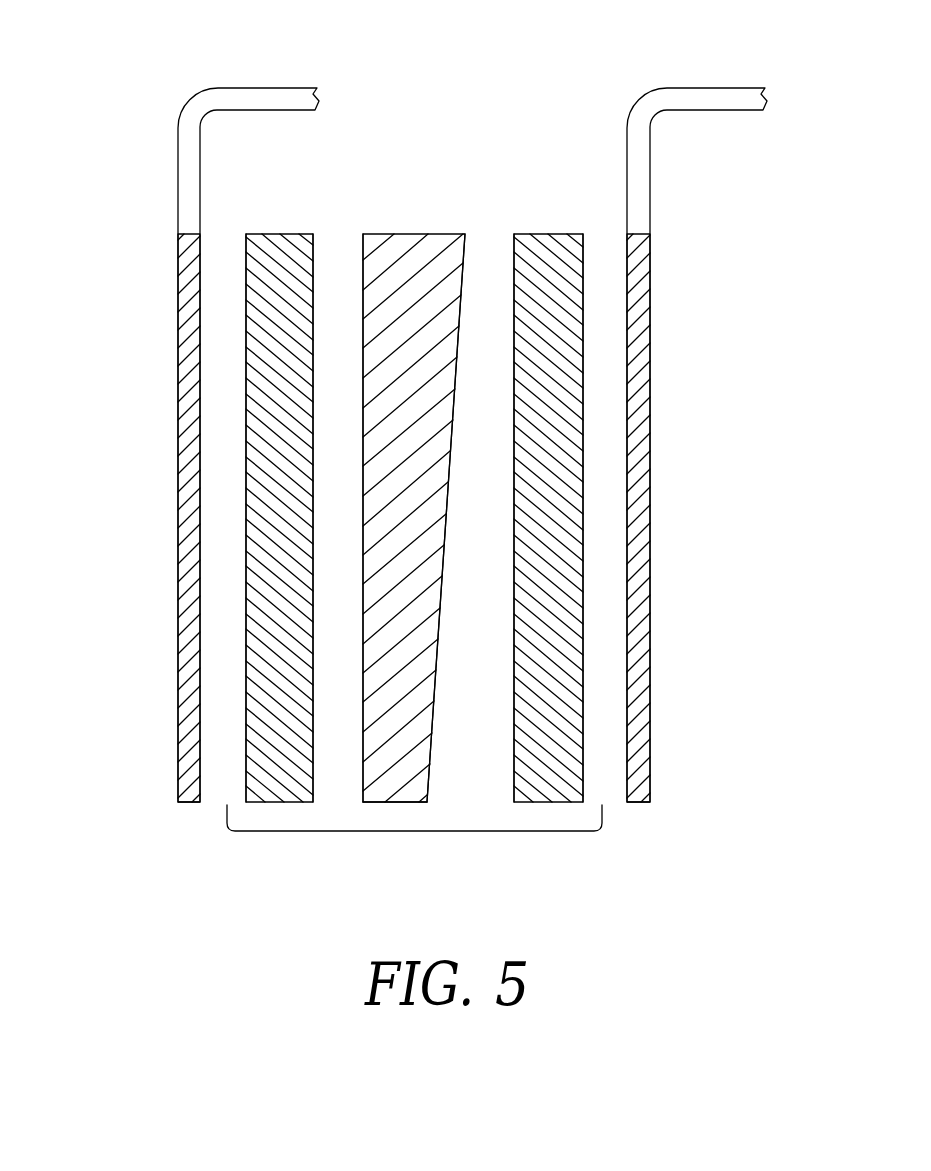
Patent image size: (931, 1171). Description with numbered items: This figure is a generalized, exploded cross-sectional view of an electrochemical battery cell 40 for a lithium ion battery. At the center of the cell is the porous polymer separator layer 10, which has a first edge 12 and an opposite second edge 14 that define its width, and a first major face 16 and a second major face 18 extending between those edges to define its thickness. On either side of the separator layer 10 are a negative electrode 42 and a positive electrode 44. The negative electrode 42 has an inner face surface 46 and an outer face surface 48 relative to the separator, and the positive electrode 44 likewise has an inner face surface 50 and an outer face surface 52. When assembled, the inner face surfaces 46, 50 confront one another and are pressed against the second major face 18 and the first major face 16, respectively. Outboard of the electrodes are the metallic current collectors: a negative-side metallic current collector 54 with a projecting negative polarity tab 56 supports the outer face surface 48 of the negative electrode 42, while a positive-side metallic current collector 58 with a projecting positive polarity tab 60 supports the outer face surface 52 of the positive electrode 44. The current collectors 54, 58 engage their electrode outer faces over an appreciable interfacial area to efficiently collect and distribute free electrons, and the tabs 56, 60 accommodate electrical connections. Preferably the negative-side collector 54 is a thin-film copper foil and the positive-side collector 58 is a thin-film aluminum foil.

The porous polymer separator layer 10 is at (417, 499).
The first edge 12 is at (437, 234).
The second edge 14 is at (413, 803).
The first major face 16 is at (465, 305).
The second major face 18 is at (363, 310).
The electrochemical battery cell 40 is at (373, 831).
The negative electrode 42 is at (211, 469).
The positive electrode 44 is at (614, 468).
The inner face surface 46 is at (313, 569).
The outer face surface 48 is at (246, 503).
The inner face surface 50 is at (515, 569).
The outer face surface 52 is at (583, 503).
The negative-side metallic current collector 54 is at (178, 360).
The negative polarity tab 56 is at (181, 445).
The positive-side metallic current collector 58 is at (650, 360).
The positive polarity tab 60 is at (706, 445).